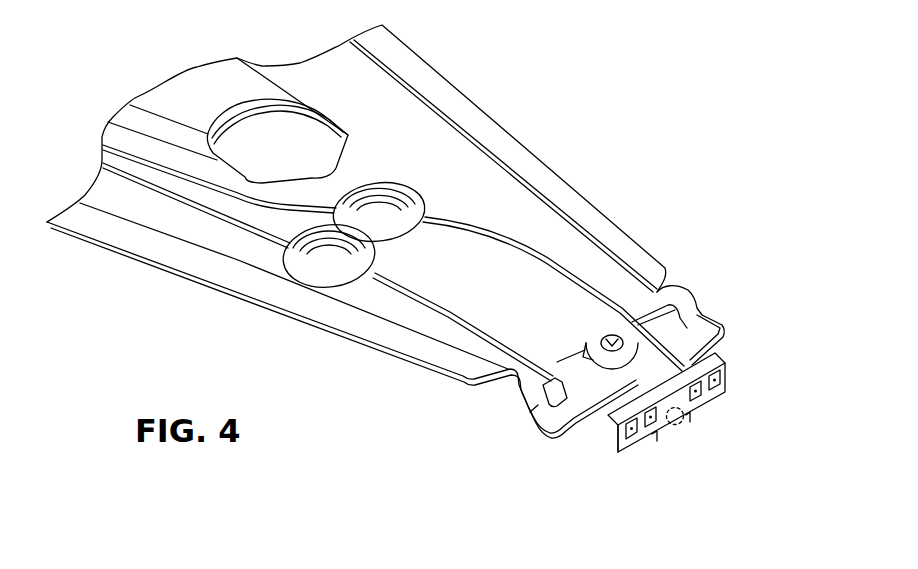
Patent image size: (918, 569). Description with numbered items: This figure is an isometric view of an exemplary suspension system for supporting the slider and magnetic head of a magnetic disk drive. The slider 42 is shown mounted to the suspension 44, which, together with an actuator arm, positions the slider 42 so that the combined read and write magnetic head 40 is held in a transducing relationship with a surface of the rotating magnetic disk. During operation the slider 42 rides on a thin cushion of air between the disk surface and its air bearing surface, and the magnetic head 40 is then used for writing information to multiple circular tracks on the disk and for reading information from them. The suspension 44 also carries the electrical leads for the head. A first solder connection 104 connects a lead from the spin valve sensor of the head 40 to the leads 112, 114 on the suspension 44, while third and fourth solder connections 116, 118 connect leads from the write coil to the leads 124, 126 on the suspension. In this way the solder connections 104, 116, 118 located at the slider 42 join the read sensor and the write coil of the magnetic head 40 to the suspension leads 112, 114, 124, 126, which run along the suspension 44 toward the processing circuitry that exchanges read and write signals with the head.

The suspension 44 is at (533, 140).
The lead 114 is at (583, 280).
The lead 112 is at (403, 297).
The lead 126 is at (503, 247).
The lead 124 is at (447, 313).
The slider 42 is at (568, 442).
The first solder connection 104 is at (622, 445).
The third solder connection 116 is at (722, 383).
The fourth solder connection 118 is at (700, 402).
The magnetic head 40 is at (685, 424).